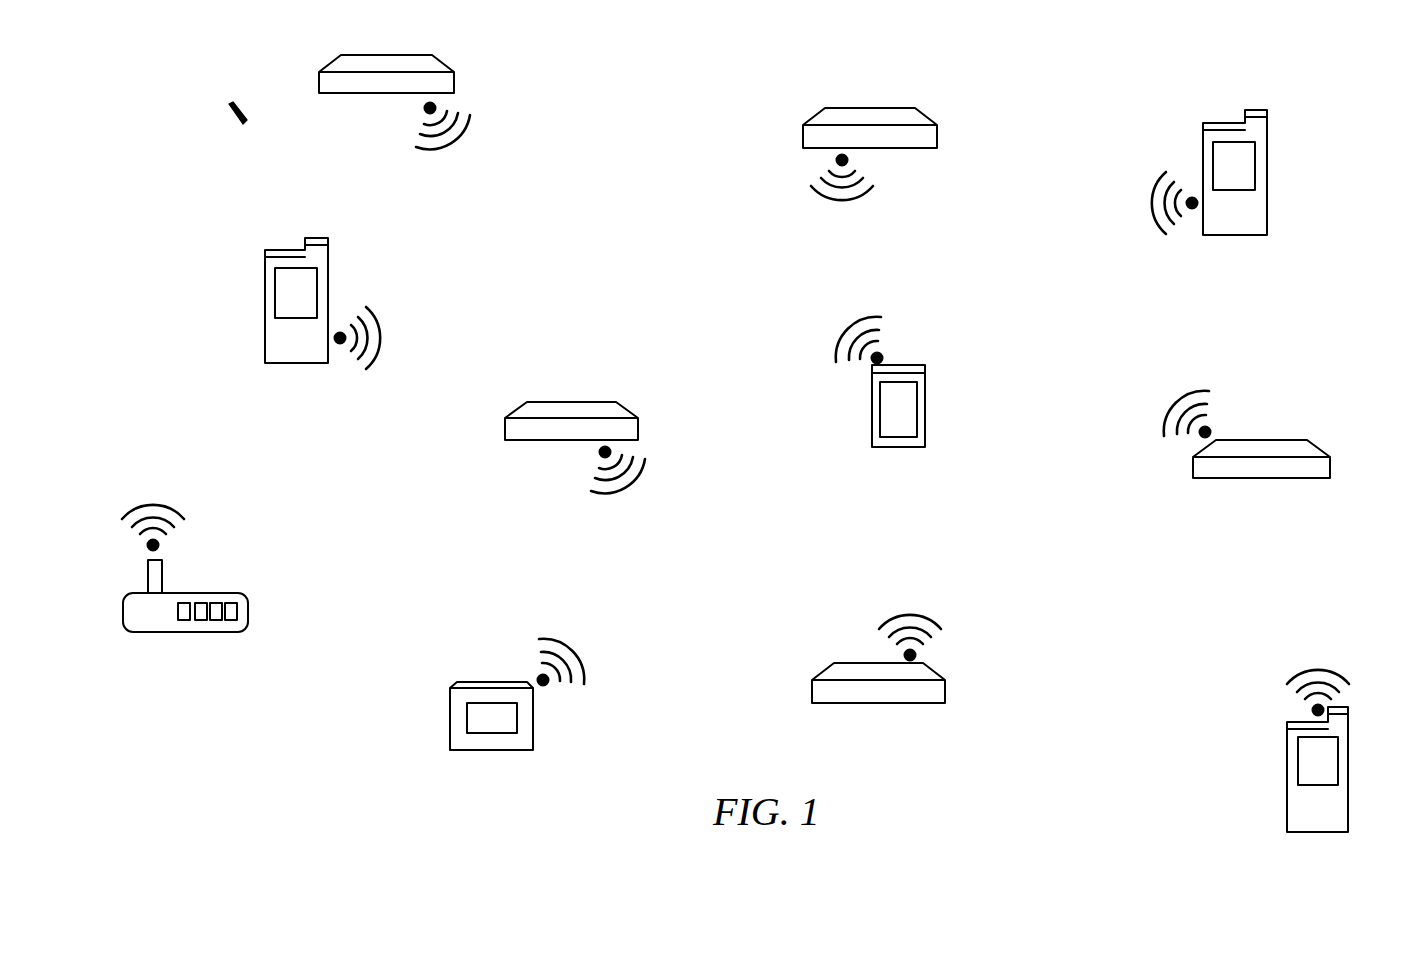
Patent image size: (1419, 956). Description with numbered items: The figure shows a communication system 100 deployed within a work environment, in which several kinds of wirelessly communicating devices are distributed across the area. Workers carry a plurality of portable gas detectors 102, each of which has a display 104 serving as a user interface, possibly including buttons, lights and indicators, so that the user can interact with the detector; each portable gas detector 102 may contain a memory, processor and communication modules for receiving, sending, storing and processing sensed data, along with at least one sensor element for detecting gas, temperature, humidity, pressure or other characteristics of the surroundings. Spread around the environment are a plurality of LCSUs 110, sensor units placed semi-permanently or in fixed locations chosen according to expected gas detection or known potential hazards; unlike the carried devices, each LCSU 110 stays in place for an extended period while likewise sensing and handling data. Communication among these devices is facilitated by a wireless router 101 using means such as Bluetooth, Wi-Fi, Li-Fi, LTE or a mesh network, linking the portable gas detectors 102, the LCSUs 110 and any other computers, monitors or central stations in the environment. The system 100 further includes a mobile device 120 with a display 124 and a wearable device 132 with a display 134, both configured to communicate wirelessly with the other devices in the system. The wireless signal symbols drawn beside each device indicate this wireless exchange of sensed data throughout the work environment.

The communication system 100 is at (229, 105).
The wireless router 101 is at (213, 593).
The portable gas detector 102 is at (266, 252).
The display 104 is at (317, 297).
The LCSU 110 is at (446, 63).
The mobile device 120 is at (872, 396).
The display 124 is at (917, 403).
The tablet device 132 is at (450, 714).
The display 134 is at (517, 716).